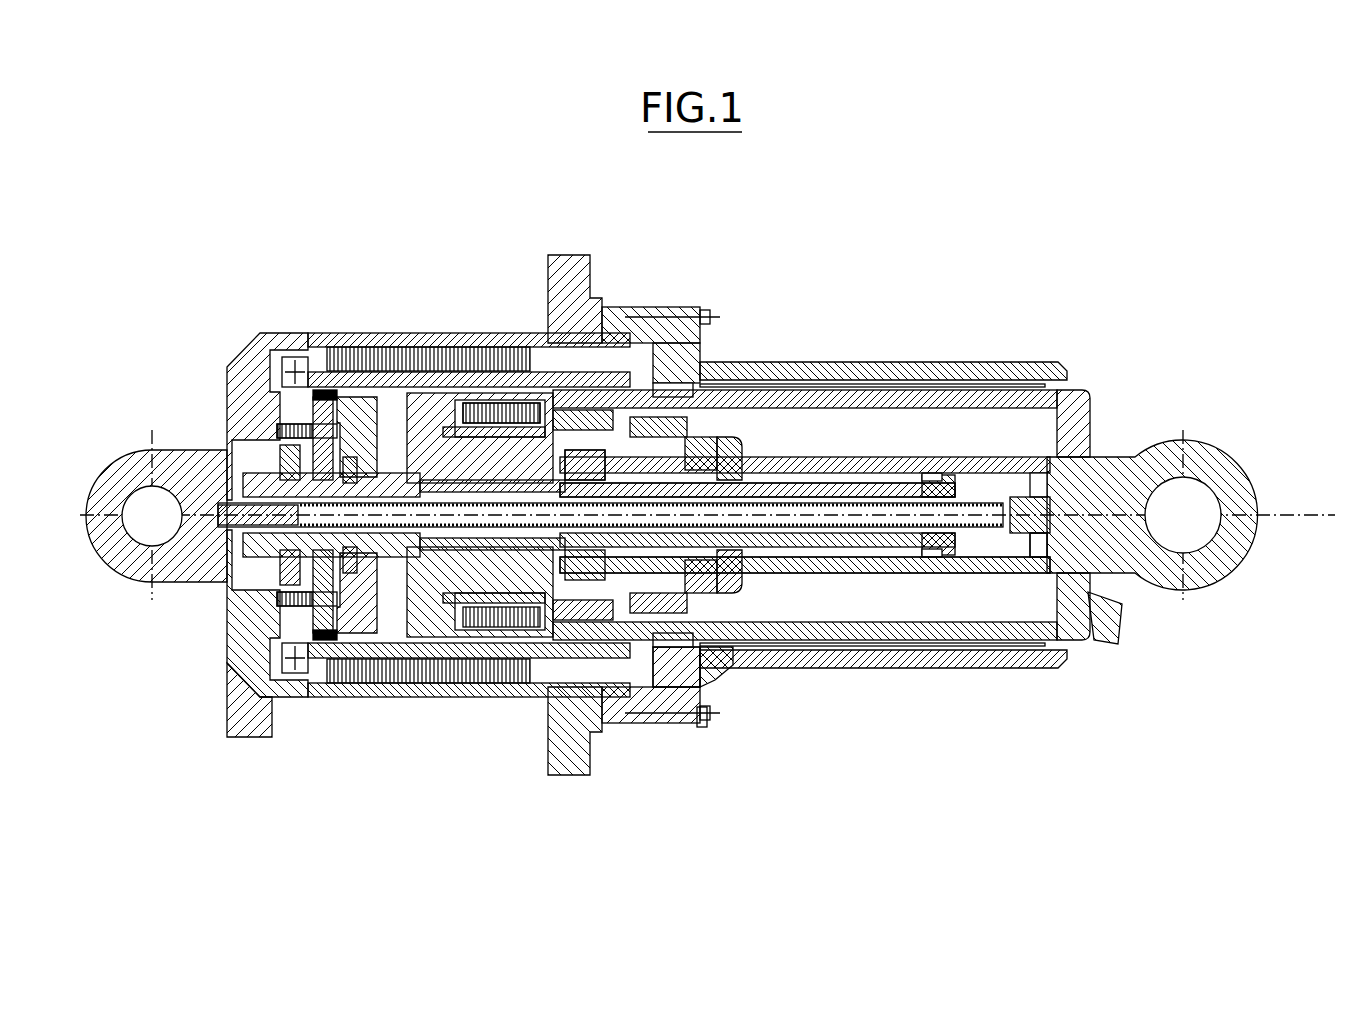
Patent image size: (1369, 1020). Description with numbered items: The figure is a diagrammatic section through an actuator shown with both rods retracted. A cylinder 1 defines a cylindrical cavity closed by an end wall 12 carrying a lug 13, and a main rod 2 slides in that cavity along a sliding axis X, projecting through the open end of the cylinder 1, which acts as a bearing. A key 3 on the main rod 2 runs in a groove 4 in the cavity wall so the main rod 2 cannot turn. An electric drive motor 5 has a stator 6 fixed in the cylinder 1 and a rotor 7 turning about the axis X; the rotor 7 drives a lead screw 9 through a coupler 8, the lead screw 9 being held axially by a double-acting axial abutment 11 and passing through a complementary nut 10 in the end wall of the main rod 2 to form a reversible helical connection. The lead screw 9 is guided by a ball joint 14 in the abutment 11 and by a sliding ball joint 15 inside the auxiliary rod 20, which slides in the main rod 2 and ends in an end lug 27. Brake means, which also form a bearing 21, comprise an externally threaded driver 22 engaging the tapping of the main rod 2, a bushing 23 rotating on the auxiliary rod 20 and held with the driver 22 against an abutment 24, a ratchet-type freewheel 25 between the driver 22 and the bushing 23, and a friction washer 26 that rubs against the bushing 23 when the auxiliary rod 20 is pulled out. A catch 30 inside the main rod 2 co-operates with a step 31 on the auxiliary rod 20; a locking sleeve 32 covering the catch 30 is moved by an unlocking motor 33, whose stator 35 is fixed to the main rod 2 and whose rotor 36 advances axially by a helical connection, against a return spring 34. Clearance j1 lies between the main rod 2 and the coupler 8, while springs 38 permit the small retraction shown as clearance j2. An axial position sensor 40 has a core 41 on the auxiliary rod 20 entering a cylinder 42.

The cylinder 1 is at (406, 455).
The main rod 2 is at (1090, 413).
The key 3 is at (685, 383).
The groove 4 is at (913, 380).
The electric drive motor 5 is at (310, 333).
The stator 6 is at (314, 358).
The rotor 7 is at (540, 398).
The coupler 8 is at (307, 407).
The lead screw 9 is at (435, 547).
The complementary nut 10 is at (379, 556).
The double-acting axial abutment 11 is at (275, 588).
The end wall 12 is at (228, 572).
The lug 13 is at (105, 480).
The ball joint 14 is at (313, 470).
The sliding ball joint 15 is at (942, 493).
The auxiliary rod 20 is at (1088, 555).
The bearing 21 is at (783, 600).
The driver 22 is at (732, 610).
The bushing 23 is at (700, 693).
The abutment 24 is at (868, 530).
The ratchet-type freewheel 25 is at (767, 445).
The friction washer 26 is at (612, 645).
The end lug 27 is at (1225, 553).
The catch 30 is at (556, 452).
The step 31 is at (600, 462).
The locking sleeve 32 is at (570, 462).
The unlocking motor 33 is at (438, 360).
The return spring 34 is at (620, 430).
The stator 35 is at (454, 405).
The rotor 36 is at (490, 425).
The springs 38 is at (505, 655).
The axial position sensor 40 is at (966, 532).
The core 41 is at (1043, 563).
The cylinder 42 is at (935, 585).
The clearance j1 is at (374, 372).
The clearance j2 is at (608, 648).
The sliding axis X is at (1318, 513).